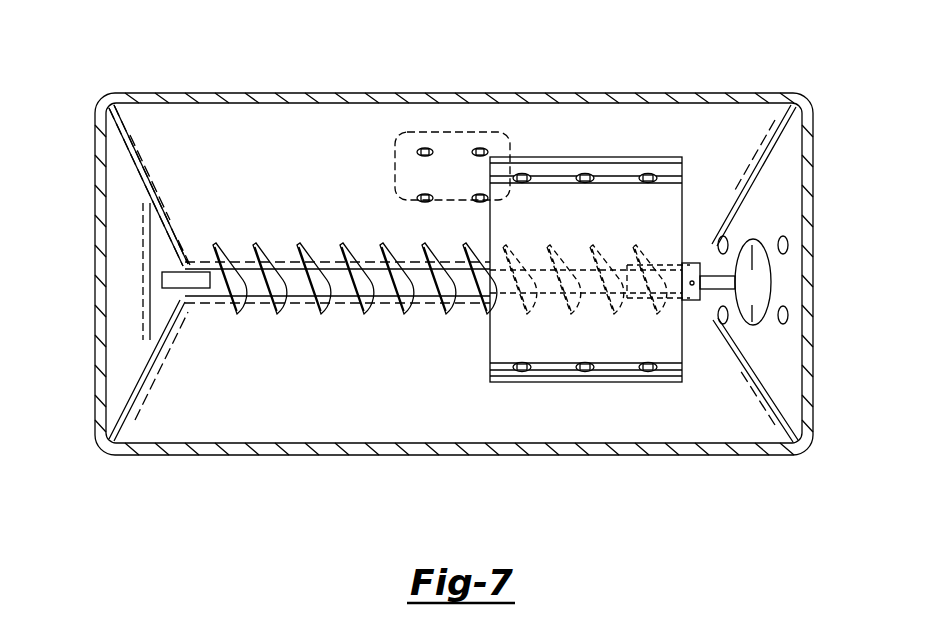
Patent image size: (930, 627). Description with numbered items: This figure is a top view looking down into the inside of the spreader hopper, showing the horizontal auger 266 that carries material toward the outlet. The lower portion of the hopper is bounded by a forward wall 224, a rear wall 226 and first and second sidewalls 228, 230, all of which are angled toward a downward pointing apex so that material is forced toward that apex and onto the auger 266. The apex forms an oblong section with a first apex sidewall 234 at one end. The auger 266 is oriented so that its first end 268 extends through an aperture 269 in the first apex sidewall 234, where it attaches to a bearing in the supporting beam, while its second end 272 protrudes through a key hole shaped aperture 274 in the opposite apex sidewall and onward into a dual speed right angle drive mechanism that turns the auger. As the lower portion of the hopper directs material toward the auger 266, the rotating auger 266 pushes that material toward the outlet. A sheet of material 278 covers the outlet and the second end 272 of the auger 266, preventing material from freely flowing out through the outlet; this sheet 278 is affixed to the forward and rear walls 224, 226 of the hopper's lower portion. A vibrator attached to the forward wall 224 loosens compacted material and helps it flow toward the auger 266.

The forward wall 224 is at (442, 93).
The rear wall 226 is at (509, 456).
The first sidewall 228 is at (95, 222).
The second sidewall 230 is at (813, 243).
The first apex sidewall 234 is at (162, 350).
The horizontal auger 266 is at (300, 242).
The first end 268 is at (198, 300).
The aperture 269 is at (162, 279).
The second end 272 is at (692, 262).
The key hole shaped aperture 274 is at (752, 324).
The sheet of material 278 is at (490, 350).